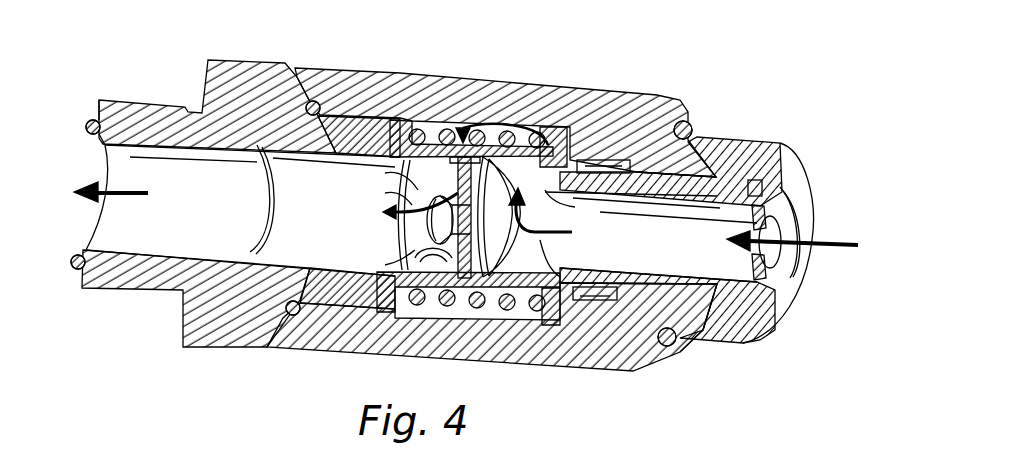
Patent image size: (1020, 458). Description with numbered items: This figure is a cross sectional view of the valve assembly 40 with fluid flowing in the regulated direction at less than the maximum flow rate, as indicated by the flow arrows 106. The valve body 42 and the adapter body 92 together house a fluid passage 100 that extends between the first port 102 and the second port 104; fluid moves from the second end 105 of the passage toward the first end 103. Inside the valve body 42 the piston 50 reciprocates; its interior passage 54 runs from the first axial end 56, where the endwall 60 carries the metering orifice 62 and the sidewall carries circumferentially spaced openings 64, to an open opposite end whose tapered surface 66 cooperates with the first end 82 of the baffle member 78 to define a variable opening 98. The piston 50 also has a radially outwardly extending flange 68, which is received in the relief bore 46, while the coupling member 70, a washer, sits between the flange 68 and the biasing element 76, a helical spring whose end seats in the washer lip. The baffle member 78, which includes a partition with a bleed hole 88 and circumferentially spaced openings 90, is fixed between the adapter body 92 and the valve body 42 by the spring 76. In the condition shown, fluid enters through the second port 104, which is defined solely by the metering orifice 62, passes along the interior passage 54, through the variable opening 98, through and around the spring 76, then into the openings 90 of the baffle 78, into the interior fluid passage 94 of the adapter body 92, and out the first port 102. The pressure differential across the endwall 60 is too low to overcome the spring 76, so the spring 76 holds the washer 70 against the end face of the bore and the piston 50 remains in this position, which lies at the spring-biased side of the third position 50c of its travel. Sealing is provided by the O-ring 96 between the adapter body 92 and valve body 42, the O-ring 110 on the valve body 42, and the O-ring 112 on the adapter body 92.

The valve assembly 40 is at (141, 62).
The valve body 42 is at (613, 97).
The relief bore 46 is at (642, 368).
The piston 50 is at (714, 292).
The third position 50c is at (720, 302).
The interior passage 54 is at (705, 150).
The first axial end 56 is at (775, 283).
The endwall 60 is at (773, 285).
The metering orifice 62 is at (780, 227).
The circumferentially spaced openings 64 is at (755, 193).
The tapered surface 66 is at (548, 100).
The flange 68 is at (592, 298).
The coupling member 70 is at (548, 306).
The biasing element 76 is at (505, 310).
The baffle member 78 is at (387, 310).
The first end 82 is at (526, 102).
The bleed hole 88 is at (447, 310).
The circumferentially spaced openings 90 is at (398, 170).
The adapter body 92 is at (240, 78).
The interior fluid passage 94 is at (167, 222).
The O-ring 96 is at (292, 317).
The variable opening 98 is at (548, 195).
The fluid passage 100 is at (300, 187).
The first port 102 is at (100, 222).
The first end 103 is at (90, 164).
The second port 104 is at (795, 295).
The second end 105 is at (824, 224).
The flow arrows 106 is at (150, 192).
The O-ring 110 is at (683, 352).
The O-ring 112 is at (80, 268).